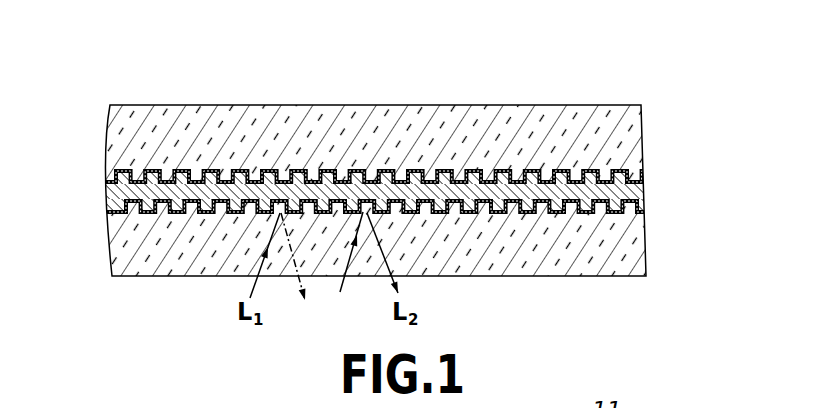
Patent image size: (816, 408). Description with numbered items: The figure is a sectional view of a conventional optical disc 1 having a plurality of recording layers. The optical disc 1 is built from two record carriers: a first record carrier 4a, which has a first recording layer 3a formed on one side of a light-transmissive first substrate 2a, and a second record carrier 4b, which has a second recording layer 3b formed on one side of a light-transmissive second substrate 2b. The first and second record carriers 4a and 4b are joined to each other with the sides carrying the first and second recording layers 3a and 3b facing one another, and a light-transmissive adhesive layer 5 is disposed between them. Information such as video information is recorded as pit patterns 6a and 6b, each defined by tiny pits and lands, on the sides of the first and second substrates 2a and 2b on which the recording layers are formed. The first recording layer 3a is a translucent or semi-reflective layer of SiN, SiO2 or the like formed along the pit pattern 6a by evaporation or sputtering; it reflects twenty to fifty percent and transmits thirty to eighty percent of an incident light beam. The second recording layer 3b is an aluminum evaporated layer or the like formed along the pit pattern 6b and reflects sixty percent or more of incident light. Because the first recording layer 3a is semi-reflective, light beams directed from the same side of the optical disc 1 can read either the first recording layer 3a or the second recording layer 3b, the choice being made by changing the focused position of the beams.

The optical disc 1 is at (388, 145).
The first substrate 2a is at (632, 258).
The second substrate 2b is at (628, 123).
The first recording layer 3a is at (636, 210).
The second recording layer 3b is at (629, 169).
The first record carrier 4a is at (388, 244).
The second record carrier 4b is at (388, 144).
The adhesive layer 5 is at (633, 187).
The pit pattern 6a is at (565, 213).
The pit pattern 6b is at (549, 168).